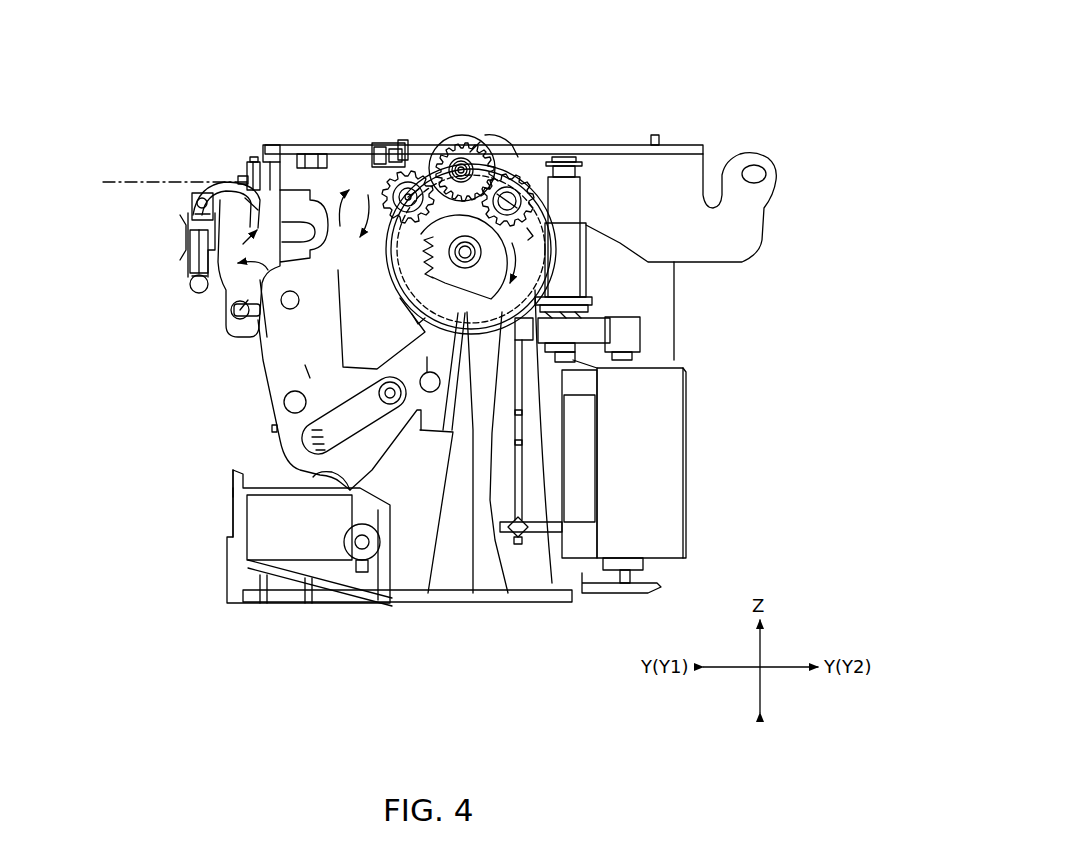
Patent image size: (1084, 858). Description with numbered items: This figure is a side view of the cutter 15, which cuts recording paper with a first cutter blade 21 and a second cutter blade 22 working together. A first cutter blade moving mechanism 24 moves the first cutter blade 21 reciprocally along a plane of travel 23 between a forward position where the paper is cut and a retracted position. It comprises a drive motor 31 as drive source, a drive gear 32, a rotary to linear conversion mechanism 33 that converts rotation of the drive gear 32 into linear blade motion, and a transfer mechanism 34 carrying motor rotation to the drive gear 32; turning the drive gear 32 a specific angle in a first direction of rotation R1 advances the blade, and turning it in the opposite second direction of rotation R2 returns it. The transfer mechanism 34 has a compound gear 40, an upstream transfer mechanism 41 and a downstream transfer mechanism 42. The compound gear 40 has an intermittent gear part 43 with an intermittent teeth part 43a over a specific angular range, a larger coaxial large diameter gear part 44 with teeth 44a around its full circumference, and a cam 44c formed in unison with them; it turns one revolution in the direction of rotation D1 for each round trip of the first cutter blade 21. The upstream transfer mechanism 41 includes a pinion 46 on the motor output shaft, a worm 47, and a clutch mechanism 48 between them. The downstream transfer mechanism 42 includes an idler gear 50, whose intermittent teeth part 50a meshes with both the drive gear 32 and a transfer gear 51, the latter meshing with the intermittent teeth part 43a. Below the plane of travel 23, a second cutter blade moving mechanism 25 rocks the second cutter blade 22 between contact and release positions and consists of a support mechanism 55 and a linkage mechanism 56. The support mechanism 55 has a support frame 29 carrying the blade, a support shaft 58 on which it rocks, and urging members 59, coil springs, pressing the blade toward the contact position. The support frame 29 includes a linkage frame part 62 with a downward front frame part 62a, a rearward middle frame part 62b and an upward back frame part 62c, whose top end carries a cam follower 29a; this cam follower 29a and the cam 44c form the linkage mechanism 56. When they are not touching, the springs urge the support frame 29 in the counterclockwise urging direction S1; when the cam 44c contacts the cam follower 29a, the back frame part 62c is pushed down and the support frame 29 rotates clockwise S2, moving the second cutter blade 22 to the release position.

The cutter 15 is at (622, 102).
The first cutter blade 21 is at (241, 165).
The second cutter blade 22 is at (173, 251).
The plane of travel 23 is at (143, 182).
The first cutter blade moving mechanism 24 is at (608, 208).
The second cutter blade moving mechanism 25 is at (253, 434).
The support frame 29 is at (297, 366).
The cam follower 29a is at (462, 300).
The drive motor 31 is at (665, 487).
The drive gear 32 is at (408, 148).
The rotary to linear conversion mechanism 33 is at (387, 146).
The transfer mechanism 34 is at (617, 150).
The compound gear 40 is at (474, 303).
The upstream transfer mechanism 41 is at (656, 267).
The downstream transfer mechanism 42 is at (522, 83).
The intermittent gear part 43 is at (322, 311).
The intermittent teeth part 43a is at (447, 230).
The large diameter gear part 44 is at (508, 593).
The teeth 44a is at (552, 583).
The cam 44c is at (421, 651).
The pinion 46 is at (630, 343).
The worm 47 is at (583, 275).
The clutch mechanism 48 is at (580, 328).
The idler gear 50 is at (473, 122).
The intermittent teeth part 50a is at (482, 150).
The transfer gear 51 is at (533, 168).
The support mechanism 55 is at (175, 236).
The linkage mechanism 56 is at (445, 658).
The support shaft 58 is at (188, 215).
The urging members 59 is at (187, 250).
The linkage frame part 62 is at (362, 532).
The front frame part 62a is at (330, 370).
The middle frame part 62b is at (352, 492).
The back frame part 62c is at (390, 505).
The direction of rotation D1 is at (570, 267).
The first direction of rotation R1 is at (353, 231).
The second direction of rotation R2 is at (336, 206).
The counterclockwise urging direction S1 is at (230, 250).
The clockwise rotation direction S2 is at (258, 275).